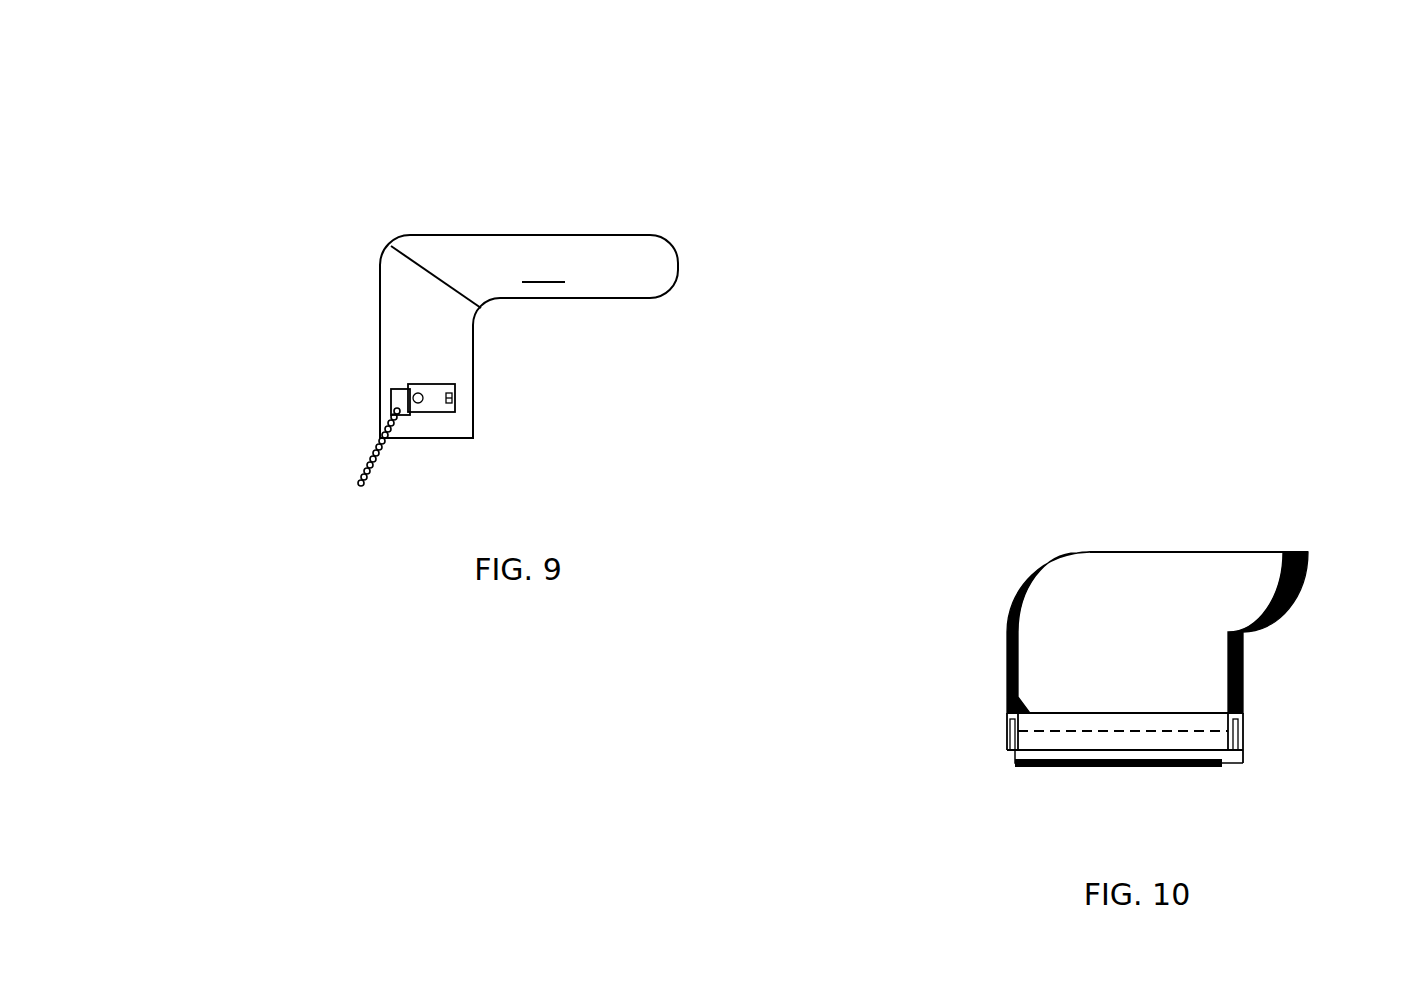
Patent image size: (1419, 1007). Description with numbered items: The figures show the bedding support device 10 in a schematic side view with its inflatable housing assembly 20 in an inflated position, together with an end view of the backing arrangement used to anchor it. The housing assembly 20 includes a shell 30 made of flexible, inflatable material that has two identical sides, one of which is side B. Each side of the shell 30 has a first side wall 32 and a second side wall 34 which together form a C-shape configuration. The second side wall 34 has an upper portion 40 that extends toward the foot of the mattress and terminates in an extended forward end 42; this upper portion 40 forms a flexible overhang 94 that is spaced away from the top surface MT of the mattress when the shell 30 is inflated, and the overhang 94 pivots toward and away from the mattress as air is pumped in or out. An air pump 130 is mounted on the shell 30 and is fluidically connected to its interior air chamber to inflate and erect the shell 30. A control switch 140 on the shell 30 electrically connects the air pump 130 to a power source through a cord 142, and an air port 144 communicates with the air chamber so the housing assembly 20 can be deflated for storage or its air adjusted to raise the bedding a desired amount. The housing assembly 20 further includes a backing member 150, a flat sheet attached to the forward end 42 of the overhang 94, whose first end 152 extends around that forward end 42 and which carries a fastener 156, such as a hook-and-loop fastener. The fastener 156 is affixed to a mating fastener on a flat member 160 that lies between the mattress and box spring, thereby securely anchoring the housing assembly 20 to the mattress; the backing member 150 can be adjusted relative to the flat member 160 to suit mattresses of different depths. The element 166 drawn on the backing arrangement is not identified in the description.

In FIG. 9, the bedding support device 10 is at (638, 216).
In FIG. 9, the inflatable housing assembly 20 is at (566, 198).
In FIG. 9, the shell 30 is at (543, 268).
In FIG. 9, the first side wall 32 is at (378, 300).
In FIG. 9, the second side wall 34 is at (473, 427).
In FIG. 9, the upper portion 40 is at (667, 278).
In FIG. 9, the forward end 42 is at (648, 257).
In FIG. 9, the overhang 94 is at (667, 289).
In FIG. 9, the side B is at (463, 258).
In FIG. 9, the air pump 130 is at (392, 407).
In FIG. 9, the control switch 140 is at (447, 395).
In FIG. 9, the cord 142 is at (363, 470).
In FIG. 9, the air port 144 is at (418, 404).
In FIG. 10, the backing member 150 is at (1173, 578).
In FIG. 10, the first end 152 is at (1238, 552).
In FIG. 10, the fastener 156 is at (1073, 737).
In FIG. 10, the flat member 160 is at (1232, 777).
In FIG. 10, the bracket 166 is at (1006, 730).
In FIG. 10, the top surface MT is at (1148, 713).